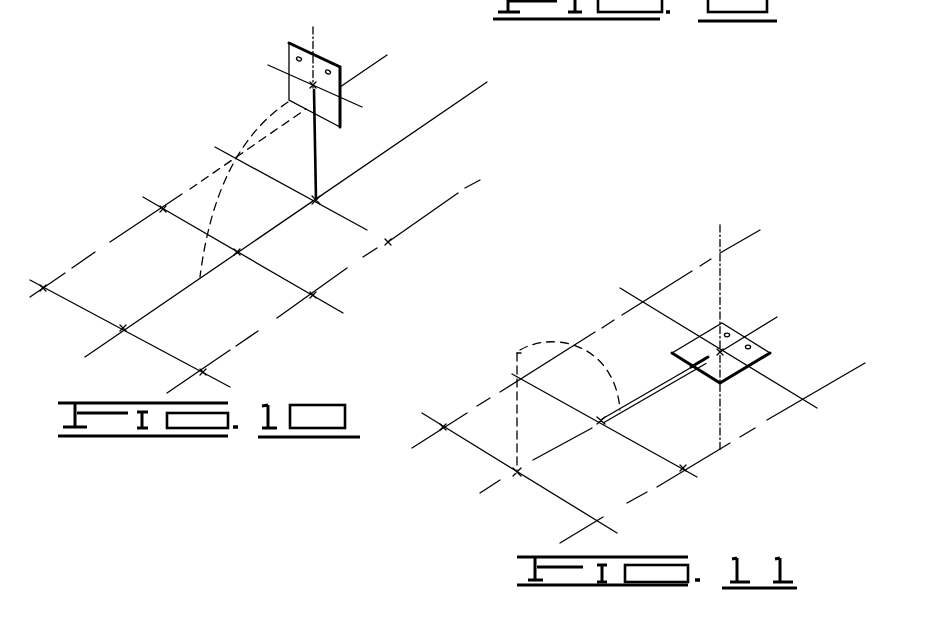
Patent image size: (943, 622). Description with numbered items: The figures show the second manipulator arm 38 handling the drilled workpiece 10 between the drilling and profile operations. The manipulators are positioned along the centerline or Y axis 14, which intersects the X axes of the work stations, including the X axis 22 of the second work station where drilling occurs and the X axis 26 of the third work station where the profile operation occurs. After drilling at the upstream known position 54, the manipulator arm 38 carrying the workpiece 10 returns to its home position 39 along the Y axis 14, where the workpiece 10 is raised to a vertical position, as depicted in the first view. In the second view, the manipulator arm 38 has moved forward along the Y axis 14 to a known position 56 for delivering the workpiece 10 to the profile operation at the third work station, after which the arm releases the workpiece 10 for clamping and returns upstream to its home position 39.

In FIG. 10, the workpiece 10 is at (335, 111).
In FIG. 11, the workpiece 10 is at (757, 352).
In FIG. 10, the Y axis 14 is at (437, 117).
In FIG. 11, the Y axis 14 is at (760, 326).
In FIG. 10, the X axis 22 is at (220, 380).
In FIG. 11, the X axis 26 is at (817, 408).
In FIG. 10, the second manipulator arm 38 is at (317, 153).
In FIG. 11, the second manipulator arm 38 is at (650, 395).
In FIG. 10, the home position 39 is at (318, 200).
In FIG. 11, the home position 39 is at (521, 472).
In FIG. 10, the known position 54 is at (280, 275).
In FIG. 11, the known position 56 is at (695, 475).